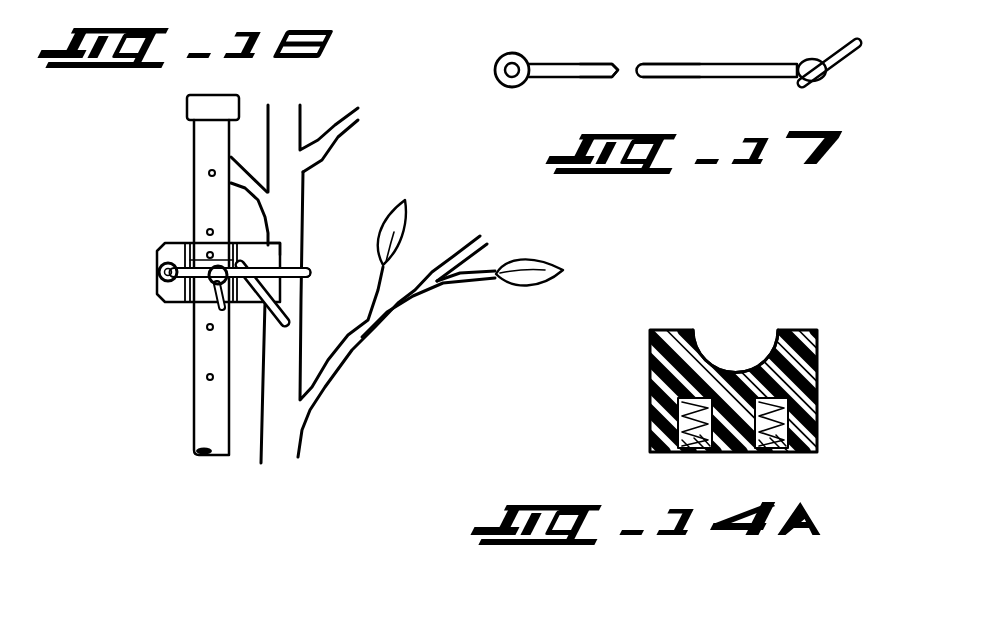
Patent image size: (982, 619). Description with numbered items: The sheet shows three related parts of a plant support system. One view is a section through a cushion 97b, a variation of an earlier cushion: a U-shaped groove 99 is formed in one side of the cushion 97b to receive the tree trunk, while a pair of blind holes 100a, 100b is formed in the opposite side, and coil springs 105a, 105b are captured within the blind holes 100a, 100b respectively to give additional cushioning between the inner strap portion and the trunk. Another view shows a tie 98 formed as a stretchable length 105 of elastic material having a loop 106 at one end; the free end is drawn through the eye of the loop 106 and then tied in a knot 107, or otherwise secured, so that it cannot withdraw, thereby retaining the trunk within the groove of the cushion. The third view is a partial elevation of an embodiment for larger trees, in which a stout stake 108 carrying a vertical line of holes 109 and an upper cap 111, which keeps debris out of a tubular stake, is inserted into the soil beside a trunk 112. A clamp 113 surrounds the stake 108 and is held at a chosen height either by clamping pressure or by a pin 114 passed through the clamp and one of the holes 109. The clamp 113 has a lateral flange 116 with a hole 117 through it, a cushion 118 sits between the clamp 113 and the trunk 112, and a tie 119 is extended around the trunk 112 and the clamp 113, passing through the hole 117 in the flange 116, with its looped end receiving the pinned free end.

In FIG. 14A, the cushion 97b is at (817, 353).
In FIG. 17, the tie 98 is at (601, 60).
In FIG. 14A, the U-shaped groove 99 is at (772, 333).
In FIG. 14A, the blind hole 100a is at (687, 453).
In FIG. 14A, the blind hole 100b is at (777, 450).
In FIG. 17, the stretchable length 105 is at (687, 78).
In FIG. 14A, the coil spring 105a is at (693, 442).
In FIG. 14A, the coil spring 105b is at (763, 447).
In FIG. 17, the loop 106 is at (495, 62).
In FIG. 17, the knot 107 is at (823, 80).
In FIG. 18, the stake 108 is at (192, 426).
In FIG. 18, the holes 109 is at (208, 173).
In FIG. 18, the upper cap 111 is at (187, 102).
In FIG. 18, the trunk 112 is at (313, 180).
In FIG. 18, the clamp 113 is at (188, 303).
In FIG. 18, the pin 114 is at (207, 233).
In FIG. 18, the lateral flange 116 is at (160, 253).
In FIG. 18, the hole 117 is at (160, 277).
In FIG. 18, the cushion 118 is at (287, 247).
In FIG. 18, the tie 119 is at (311, 272).